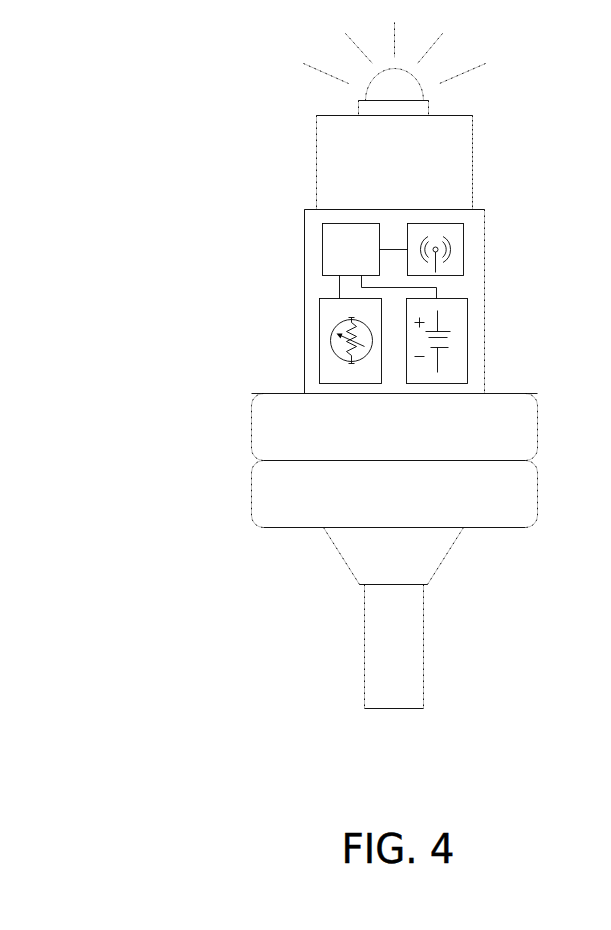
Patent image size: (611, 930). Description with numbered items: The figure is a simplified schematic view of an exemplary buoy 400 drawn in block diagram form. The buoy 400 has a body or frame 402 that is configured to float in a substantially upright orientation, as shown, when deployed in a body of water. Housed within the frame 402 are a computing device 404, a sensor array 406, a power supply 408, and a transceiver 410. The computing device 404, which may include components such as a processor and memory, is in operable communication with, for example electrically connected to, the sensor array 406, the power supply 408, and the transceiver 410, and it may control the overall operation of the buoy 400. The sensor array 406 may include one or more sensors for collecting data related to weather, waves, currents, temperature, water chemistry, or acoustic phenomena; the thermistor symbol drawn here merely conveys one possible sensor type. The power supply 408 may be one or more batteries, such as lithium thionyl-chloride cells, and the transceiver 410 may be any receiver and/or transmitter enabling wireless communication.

The buoy 400 is at (228, 133).
The body 402 is at (251, 422).
The computing device 404 is at (322, 262).
The sensor array 406 is at (319, 367).
The power supply 408 is at (467, 367).
The transceiver 410 is at (463, 258).